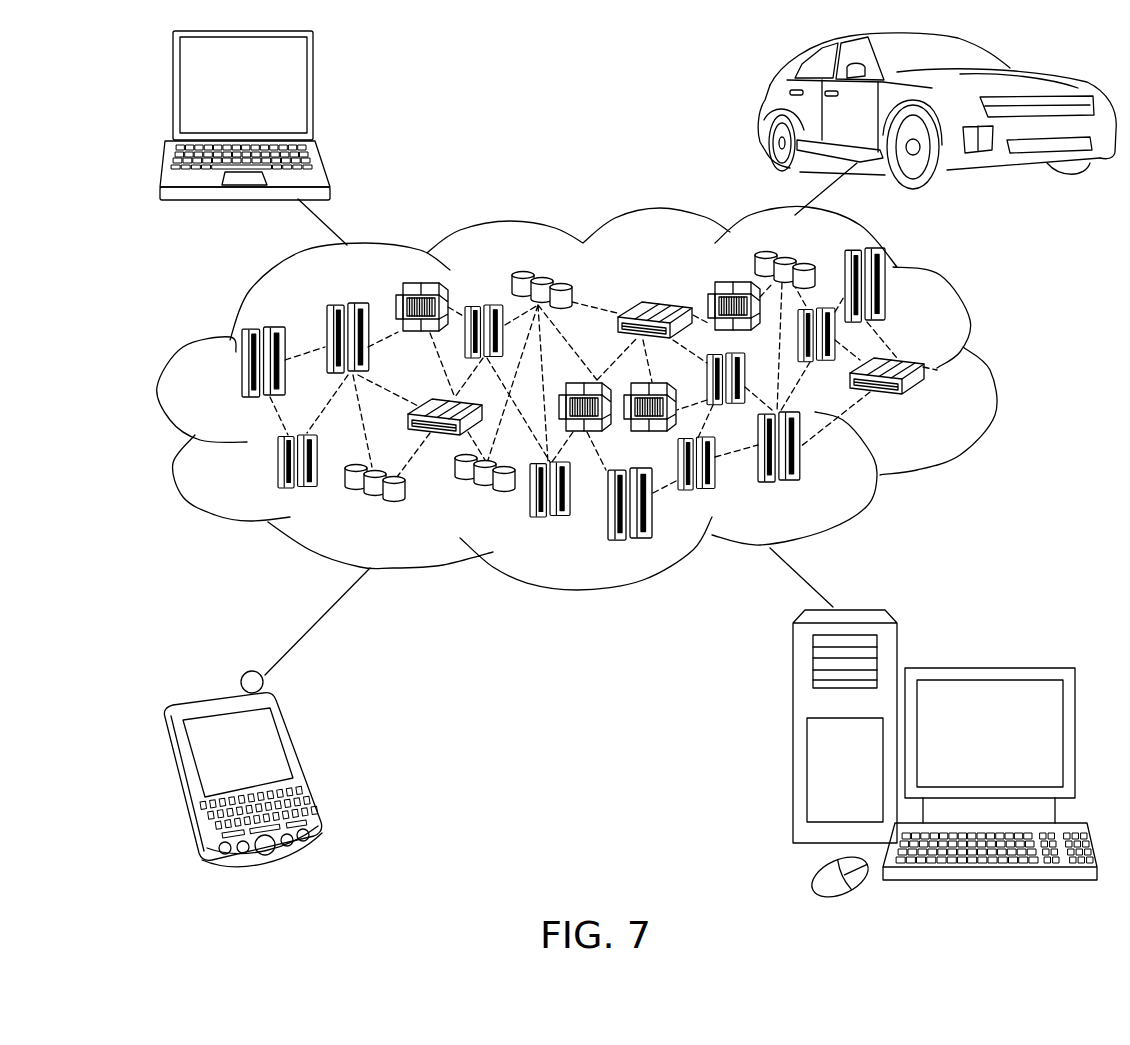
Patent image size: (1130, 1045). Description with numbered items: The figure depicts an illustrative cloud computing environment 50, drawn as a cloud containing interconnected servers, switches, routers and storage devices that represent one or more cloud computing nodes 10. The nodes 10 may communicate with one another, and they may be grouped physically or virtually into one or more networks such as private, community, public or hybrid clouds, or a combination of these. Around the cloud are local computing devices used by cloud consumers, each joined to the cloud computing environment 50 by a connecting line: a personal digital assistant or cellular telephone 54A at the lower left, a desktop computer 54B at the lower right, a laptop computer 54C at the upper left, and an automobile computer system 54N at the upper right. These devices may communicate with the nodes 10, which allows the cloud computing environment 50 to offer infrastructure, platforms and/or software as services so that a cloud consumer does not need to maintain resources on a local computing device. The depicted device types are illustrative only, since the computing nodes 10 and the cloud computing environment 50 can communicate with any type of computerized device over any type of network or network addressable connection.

The laptop computer 54C is at (313, 93).
The automobile computer system 54N is at (760, 108).
The personal digital assistant (PDA) or cellular telephone 54A is at (305, 766).
The desktop computer 54B is at (985, 668).
The cloud computing environment 50 is at (987, 374).
The cloud computing node 10 is at (928, 403).